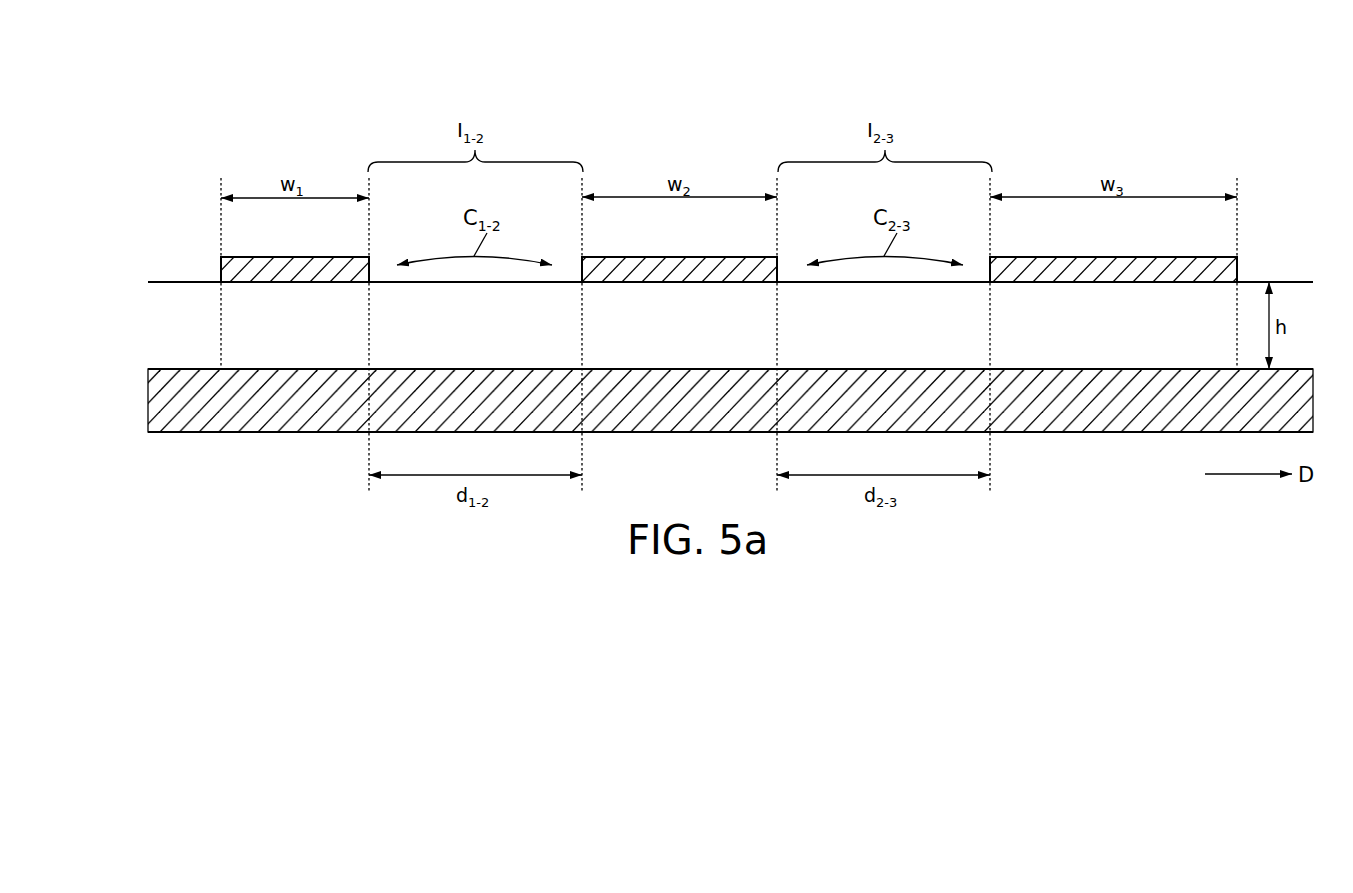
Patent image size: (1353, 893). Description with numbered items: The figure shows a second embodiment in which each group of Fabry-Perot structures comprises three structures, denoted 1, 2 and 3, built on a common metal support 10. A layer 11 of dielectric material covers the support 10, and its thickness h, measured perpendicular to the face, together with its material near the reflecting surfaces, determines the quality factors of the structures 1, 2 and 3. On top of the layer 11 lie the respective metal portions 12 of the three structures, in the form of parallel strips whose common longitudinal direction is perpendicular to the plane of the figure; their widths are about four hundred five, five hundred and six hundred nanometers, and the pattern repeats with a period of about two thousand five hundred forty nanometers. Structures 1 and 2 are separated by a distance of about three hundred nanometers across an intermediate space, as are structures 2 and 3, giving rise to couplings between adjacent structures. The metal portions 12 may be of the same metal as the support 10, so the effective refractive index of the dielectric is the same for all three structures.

The Fabry-Perot structure 1 is at (245, 140).
The Fabry-Perot structure 2 is at (643, 138).
The Fabry-Perot structure 3 is at (1060, 138).
The support 10 is at (136, 369).
The layer of dielectric material 11 is at (136, 282).
The metal portion 12 is at (327, 267).